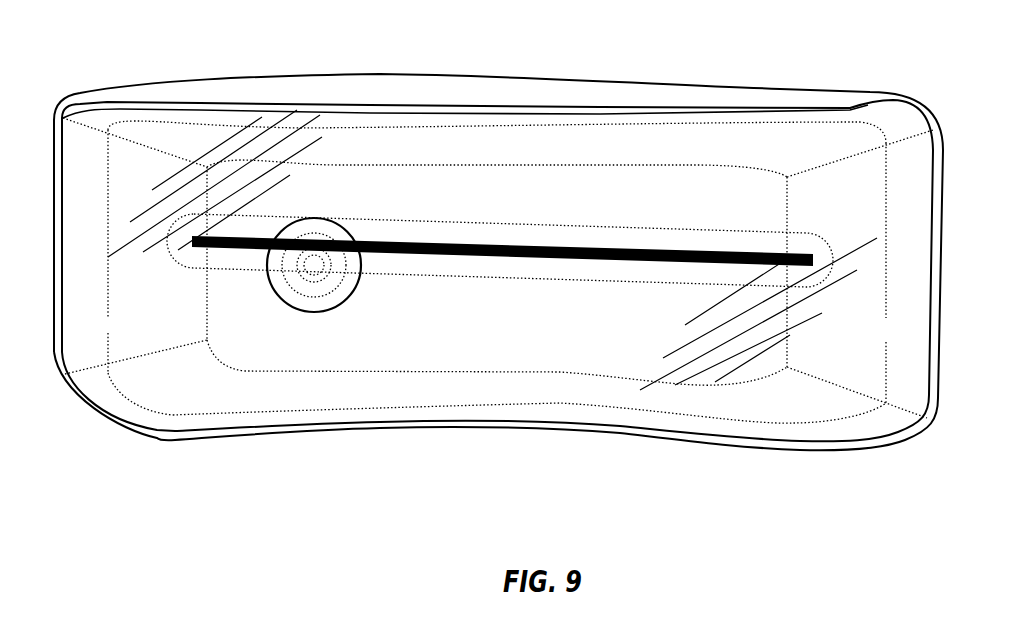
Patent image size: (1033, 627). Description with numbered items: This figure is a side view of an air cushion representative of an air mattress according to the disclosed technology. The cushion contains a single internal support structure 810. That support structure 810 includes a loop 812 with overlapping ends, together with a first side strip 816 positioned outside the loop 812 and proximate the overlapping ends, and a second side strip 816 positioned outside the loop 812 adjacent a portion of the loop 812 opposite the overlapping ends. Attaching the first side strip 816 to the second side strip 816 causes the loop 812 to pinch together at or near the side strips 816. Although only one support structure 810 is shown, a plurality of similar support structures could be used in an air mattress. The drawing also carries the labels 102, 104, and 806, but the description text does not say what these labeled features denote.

The housing 102 is at (762, 95).
The bottom wall 104 is at (630, 437).
The side wall 806 is at (72, 350).
The internal support structure 810 is at (237, 307).
The loop 812 is at (385, 345).
The side strip 816 is at (698, 247).